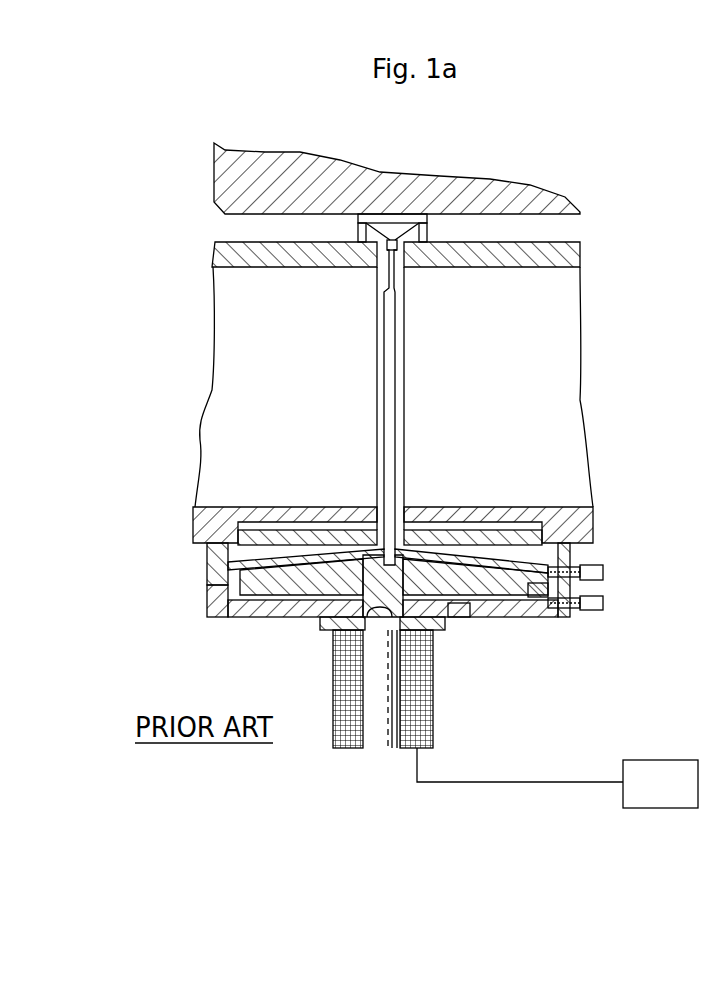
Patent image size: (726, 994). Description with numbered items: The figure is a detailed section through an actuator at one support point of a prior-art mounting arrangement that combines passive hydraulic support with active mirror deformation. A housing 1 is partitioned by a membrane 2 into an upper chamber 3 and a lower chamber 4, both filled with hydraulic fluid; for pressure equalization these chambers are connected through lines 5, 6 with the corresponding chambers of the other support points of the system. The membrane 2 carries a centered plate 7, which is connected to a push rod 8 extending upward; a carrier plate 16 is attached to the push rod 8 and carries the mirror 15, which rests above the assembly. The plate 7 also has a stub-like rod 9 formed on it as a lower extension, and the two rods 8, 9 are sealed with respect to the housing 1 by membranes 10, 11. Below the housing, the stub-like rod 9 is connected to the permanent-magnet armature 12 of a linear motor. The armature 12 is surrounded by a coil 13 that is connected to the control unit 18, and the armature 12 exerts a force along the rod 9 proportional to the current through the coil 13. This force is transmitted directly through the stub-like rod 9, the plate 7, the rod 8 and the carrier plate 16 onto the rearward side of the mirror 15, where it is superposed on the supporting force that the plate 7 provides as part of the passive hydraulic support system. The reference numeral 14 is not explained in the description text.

The housing 1 is at (507, 615).
The membrane 2 is at (540, 592).
The upper chamber 3 is at (290, 560).
The lower chamber 4 is at (240, 618).
The line 5 is at (596, 572).
The line 6 is at (603, 603).
The plate 7 is at (483, 567).
The push rod 8 is at (390, 378).
The stub-like rod 9 is at (383, 620).
The membrane 10 is at (410, 545).
The membrane 11 is at (461, 618).
The permanent-magnet armature 12 is at (375, 748).
The coil 13 is at (432, 738).
The chamber wall 14 is at (193, 521).
The mirror 15 is at (214, 170).
The carrier plate 16 is at (410, 228).
The control unit 18 is at (661, 760).